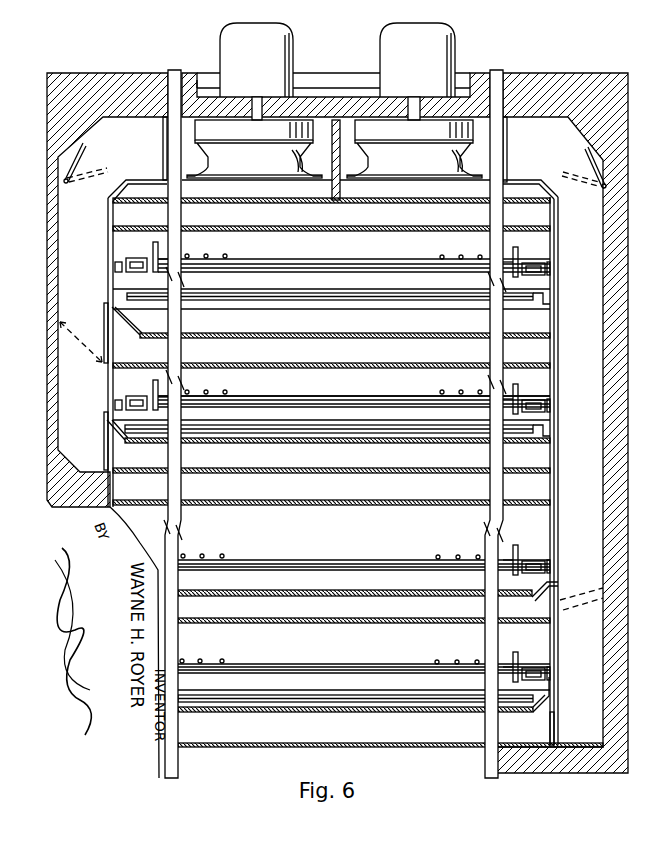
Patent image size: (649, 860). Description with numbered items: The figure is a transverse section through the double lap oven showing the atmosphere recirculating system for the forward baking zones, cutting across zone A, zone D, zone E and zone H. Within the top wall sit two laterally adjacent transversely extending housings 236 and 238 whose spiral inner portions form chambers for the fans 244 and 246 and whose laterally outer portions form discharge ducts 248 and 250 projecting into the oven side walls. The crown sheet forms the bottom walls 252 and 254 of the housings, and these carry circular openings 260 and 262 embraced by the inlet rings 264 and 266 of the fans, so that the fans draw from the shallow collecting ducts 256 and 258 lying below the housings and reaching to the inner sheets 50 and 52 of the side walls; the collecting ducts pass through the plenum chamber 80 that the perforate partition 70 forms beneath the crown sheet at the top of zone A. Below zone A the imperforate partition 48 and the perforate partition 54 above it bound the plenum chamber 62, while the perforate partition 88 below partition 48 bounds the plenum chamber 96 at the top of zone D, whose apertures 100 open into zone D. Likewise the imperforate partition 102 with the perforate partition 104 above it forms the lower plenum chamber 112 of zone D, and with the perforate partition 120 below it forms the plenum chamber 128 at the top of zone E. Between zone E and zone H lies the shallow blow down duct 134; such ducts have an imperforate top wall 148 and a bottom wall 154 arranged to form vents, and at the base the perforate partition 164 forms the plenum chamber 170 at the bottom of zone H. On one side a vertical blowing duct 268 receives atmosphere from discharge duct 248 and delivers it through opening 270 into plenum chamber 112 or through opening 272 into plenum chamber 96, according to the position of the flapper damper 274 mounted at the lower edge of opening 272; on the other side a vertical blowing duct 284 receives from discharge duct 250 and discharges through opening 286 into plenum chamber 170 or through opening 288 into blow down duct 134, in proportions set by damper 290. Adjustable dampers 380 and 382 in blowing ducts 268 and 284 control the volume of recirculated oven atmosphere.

The fan 244 is at (278, 128).
The fan 246 is at (437, 130).
The housing 236 is at (105, 117).
The housing 238 is at (560, 120).
The adjustable damper 380 is at (78, 146).
The adjustable damper 382 is at (588, 148).
The discharge duct 248 is at (124, 171).
The discharge duct 250 is at (508, 174).
The bottom wall 252 is at (165, 181).
The bottom wall 254 is at (507, 184).
The collecting duct 256 is at (238, 199).
The collecting duct 258 is at (409, 201).
The circular opening 260 is at (277, 179).
The circular opening 262 is at (397, 182).
The inlet ring 264 is at (298, 175).
The inlet ring 266 is at (462, 175).
The vertical blowing duct 268 is at (72, 254).
The vertical blowing duct 284 is at (569, 292).
The plenum chamber 80 is at (328, 224).
The horizontal perforate partition 70 is at (310, 232).
The zone A is at (341, 251).
The horizontal perforate partition 54 is at (307, 307).
The horizontal imperforate partition 48 is at (245, 336).
The plenum chamber 62 is at (314, 334).
The horizontal perforate partition 88 is at (245, 363).
The plenum chamber 96 is at (314, 359).
The flapper valve or damper 274 is at (105, 325).
The opening 272 is at (113, 345).
The zone D is at (333, 391).
The apertures 100 is at (425, 368).
The opening 270 is at (112, 453).
The inner sheet 50 is at (113, 487).
The plenum chamber 112 is at (260, 469).
The horizontal perforate partition 104 is at (388, 446).
The horizontal imperforate partition 102 is at (415, 471).
The plenum chamber 128 is at (313, 499).
The inner sheet 52 is at (555, 500).
The zone E is at (328, 530).
The horizontal perforate partition 120 is at (367, 506).
The imperforate top wall 148 is at (338, 591).
The blow down duct 134 is at (356, 614).
The flapper valve or damper 290 is at (553, 593).
The opening 288 is at (543, 600).
The bottom wall 154 is at (402, 624).
The zone H is at (326, 650).
The horizontal perforate partition 164 is at (203, 707).
The plenum chamber 170 is at (309, 737).
The opening 286 is at (551, 727).